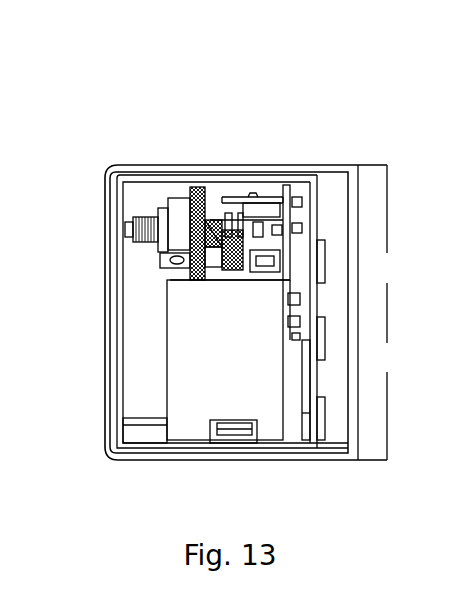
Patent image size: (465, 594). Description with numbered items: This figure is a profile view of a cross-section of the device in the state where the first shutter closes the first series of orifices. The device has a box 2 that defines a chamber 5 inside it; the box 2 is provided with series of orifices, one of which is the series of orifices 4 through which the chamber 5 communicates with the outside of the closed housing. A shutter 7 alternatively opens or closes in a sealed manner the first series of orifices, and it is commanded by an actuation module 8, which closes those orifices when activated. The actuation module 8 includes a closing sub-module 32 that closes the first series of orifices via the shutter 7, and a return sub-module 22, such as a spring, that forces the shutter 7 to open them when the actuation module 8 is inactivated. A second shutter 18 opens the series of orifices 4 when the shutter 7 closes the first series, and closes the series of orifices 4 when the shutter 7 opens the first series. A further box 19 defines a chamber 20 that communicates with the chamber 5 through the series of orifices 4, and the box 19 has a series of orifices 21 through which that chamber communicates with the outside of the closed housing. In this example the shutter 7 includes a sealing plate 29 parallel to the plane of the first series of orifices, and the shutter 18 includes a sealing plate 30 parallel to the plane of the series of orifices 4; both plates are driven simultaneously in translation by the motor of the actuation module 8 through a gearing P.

The box 2 is at (156, 150).
The series of orifices 4 is at (362, 397).
The chamber 5 is at (145, 314).
The shutter 7 is at (115, 448).
The actuation module 8 is at (282, 373).
The second shutter 18 is at (320, 218).
The box 19 is at (387, 227).
The chamber 20 is at (368, 288).
The series of orifices 21 is at (383, 362).
The return sub-module 22 is at (137, 215).
The sealing plate 29 is at (110, 262).
The sealing plate 30 is at (321, 185).
The closing sub-module 32 is at (277, 353).
The gearing P is at (213, 212).